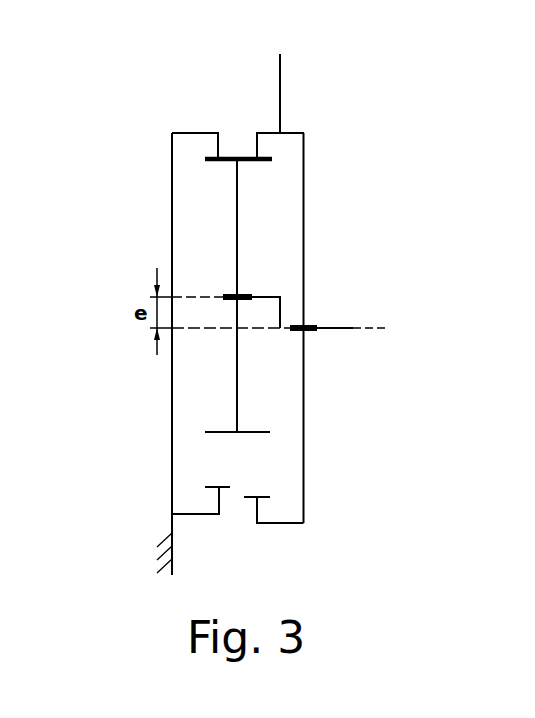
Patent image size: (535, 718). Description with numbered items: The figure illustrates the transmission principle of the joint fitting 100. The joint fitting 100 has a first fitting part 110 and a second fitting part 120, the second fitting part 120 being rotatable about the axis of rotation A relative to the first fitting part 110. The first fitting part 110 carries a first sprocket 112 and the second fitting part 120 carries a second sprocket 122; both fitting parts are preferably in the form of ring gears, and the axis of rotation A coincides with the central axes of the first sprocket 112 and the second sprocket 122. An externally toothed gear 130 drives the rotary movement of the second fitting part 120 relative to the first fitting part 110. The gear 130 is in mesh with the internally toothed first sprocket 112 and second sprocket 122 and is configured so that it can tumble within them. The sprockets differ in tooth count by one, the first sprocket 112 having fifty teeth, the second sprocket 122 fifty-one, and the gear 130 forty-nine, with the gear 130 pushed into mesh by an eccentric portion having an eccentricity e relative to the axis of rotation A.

The joint fitting 100 is at (124, 164).
The first fitting part 110 is at (172, 442).
The first sprocket 112 is at (212, 487).
The second fitting part 120 is at (304, 433).
The second sprocket 122 is at (265, 497).
The gear 130 is at (237, 230).